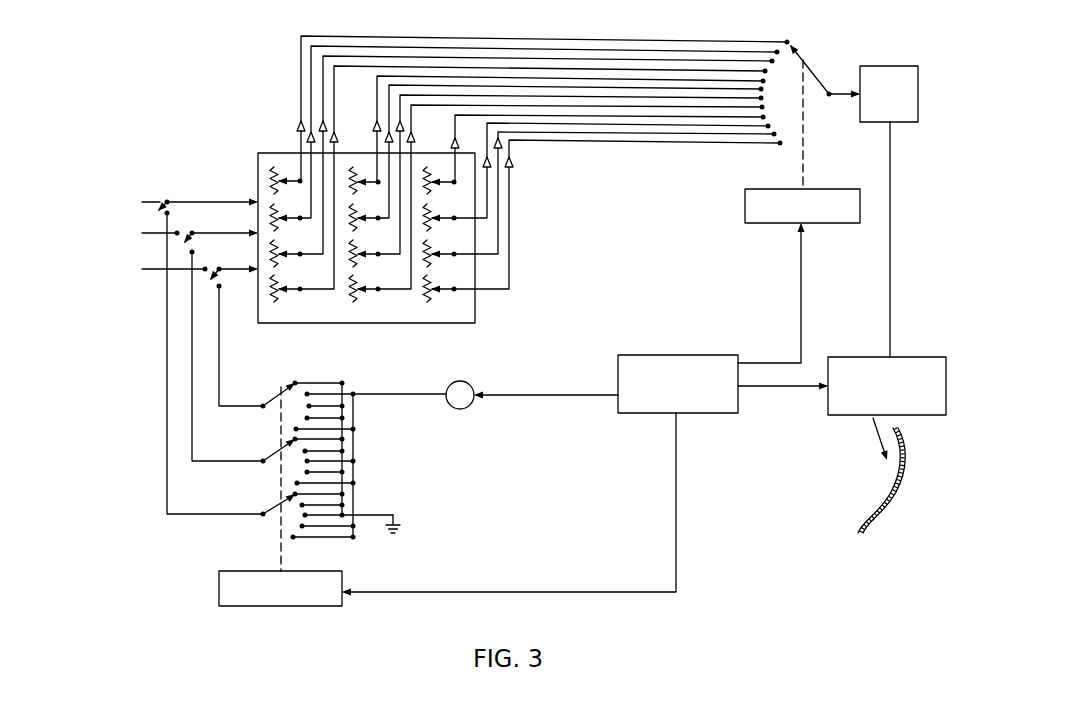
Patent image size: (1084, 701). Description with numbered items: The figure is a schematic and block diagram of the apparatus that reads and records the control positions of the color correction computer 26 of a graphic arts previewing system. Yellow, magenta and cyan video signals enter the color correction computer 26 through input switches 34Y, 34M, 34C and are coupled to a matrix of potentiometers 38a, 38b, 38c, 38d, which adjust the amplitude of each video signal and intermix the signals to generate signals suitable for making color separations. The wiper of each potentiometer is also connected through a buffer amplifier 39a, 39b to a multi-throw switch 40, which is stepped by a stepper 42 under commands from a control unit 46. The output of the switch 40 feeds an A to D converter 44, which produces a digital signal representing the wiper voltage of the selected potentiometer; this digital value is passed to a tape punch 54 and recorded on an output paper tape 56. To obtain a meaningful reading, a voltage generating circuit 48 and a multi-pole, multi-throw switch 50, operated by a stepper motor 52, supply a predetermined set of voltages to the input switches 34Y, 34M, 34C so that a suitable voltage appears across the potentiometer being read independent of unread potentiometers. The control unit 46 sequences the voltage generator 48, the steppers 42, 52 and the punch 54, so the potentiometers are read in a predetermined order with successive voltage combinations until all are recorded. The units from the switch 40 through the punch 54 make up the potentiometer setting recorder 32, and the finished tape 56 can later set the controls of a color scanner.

The color correction computer 26 is at (478, 314).
The potentiometer setting recorder 32 is at (580, 225).
The yellow video signal input switch 34Y is at (131, 185).
The magenta video signal input switch 34M is at (141, 248).
The cyan video signal input switch 34C is at (155, 292).
The potentiometer 38a is at (240, 150).
The potentiometer 38b is at (240, 187).
The potentiometer 38c is at (275, 262).
The potentiometer 38d is at (277, 297).
The buffer amplifier 39a is at (298, 124).
The buffer amplifier 39b is at (306, 136).
The multi-throw switch 40 is at (823, 116).
The stepper 42 is at (745, 205).
The A to D converter 44 is at (883, 66).
The control unit 46 is at (688, 355).
The voltage generating circuit 48 is at (450, 381).
The multi-pole multi-throw switch 50 is at (283, 392).
The stepper motor 52 is at (219, 586).
The tape punch 54 is at (868, 356).
The output paper tape 56 is at (895, 498).